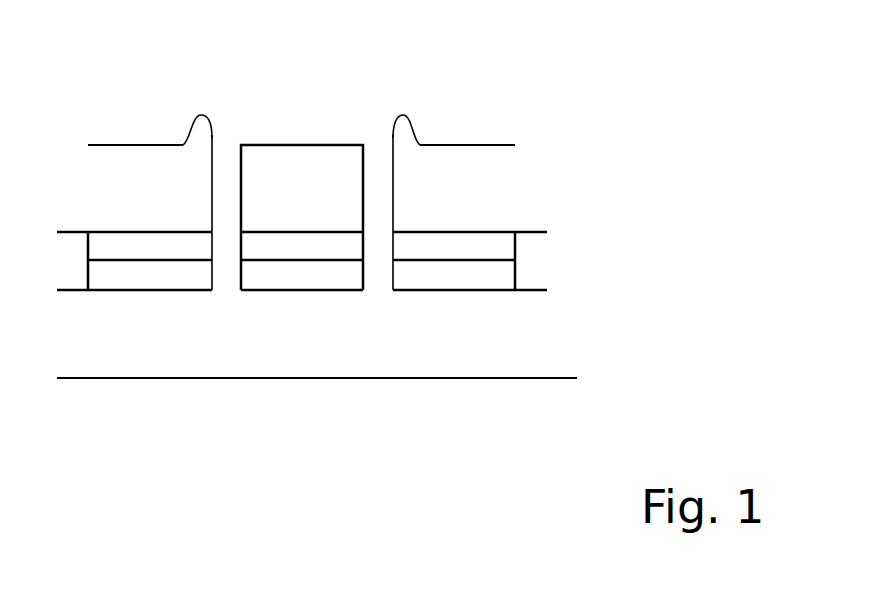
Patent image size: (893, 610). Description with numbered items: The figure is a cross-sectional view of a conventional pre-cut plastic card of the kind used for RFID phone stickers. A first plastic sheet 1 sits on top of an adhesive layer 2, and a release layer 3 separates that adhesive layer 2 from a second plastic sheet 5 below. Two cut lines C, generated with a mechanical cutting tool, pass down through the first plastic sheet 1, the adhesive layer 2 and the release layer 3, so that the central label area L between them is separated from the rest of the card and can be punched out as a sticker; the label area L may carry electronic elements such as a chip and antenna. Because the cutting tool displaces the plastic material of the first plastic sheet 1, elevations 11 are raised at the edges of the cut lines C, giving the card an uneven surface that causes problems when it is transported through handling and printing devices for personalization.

The first plastic sheet 1 is at (485, 185).
The adhesive layer 2 is at (510, 250).
The release layer 3 is at (505, 277).
The second plastic sheet 5 is at (455, 350).
The elevations 11 is at (193, 130).
The cut lines C is at (227, 183).
The label area L is at (365, 87).